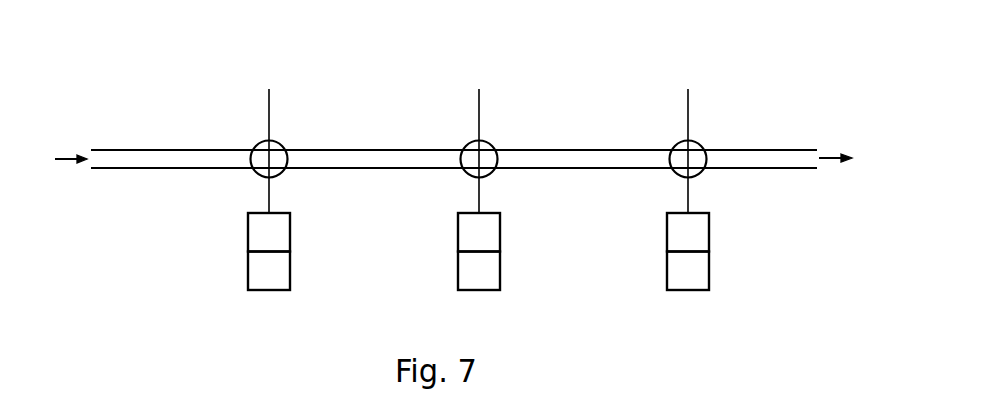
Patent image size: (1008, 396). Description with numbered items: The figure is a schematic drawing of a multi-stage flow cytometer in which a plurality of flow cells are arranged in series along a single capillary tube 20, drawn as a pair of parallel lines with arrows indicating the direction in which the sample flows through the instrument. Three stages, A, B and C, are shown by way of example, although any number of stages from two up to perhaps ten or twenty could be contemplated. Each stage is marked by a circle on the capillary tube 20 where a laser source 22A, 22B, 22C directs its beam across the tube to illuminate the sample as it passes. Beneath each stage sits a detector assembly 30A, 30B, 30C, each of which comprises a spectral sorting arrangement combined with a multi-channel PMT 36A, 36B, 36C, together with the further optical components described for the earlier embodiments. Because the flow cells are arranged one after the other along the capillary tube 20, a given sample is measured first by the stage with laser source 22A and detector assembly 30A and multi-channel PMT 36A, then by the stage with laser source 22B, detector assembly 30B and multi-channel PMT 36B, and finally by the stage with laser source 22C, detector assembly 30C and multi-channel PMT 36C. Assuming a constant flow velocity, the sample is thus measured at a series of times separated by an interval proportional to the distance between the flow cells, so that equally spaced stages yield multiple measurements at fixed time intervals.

The capillary tube 20 is at (126, 148).
The laser source 22A is at (275, 142).
The laser source 22B is at (485, 142).
The laser source 22C is at (694, 142).
The detector assembly 30A is at (290, 223).
The detector assembly 30B is at (500, 223).
The detector assembly 30C is at (709, 223).
The multi-channel PMT 36A is at (290, 267).
The multi-channel PMT 36B is at (500, 267).
The multi-channel PMT 36C is at (709, 267).